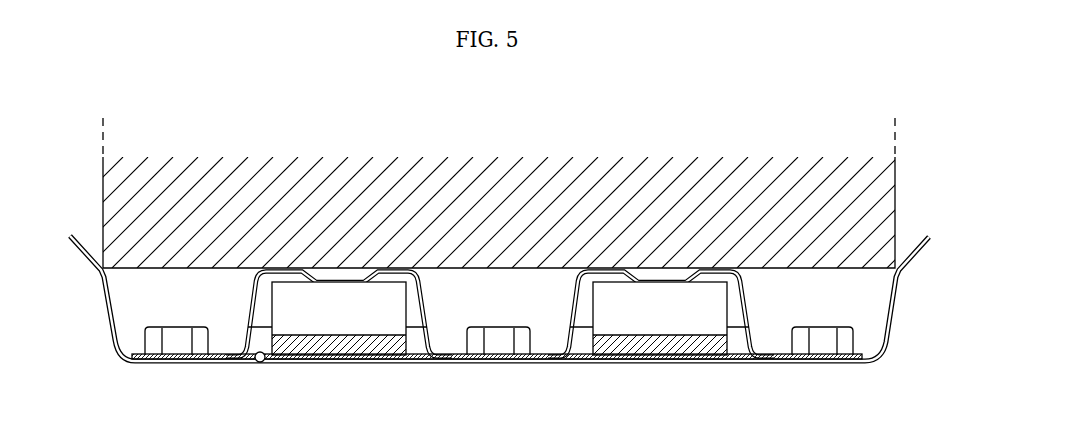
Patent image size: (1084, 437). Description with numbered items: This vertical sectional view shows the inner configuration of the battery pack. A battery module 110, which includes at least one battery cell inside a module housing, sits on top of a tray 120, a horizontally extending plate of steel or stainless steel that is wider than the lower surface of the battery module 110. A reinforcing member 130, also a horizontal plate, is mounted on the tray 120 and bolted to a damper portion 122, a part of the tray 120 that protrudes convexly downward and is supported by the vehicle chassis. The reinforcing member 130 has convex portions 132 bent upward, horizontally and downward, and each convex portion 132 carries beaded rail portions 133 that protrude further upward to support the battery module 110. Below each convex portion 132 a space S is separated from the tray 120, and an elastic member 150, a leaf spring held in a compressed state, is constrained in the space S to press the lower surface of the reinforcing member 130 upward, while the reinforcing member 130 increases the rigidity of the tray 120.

The battery module 110 is at (495, 182).
The tray 120 is at (143, 368).
The damper portion 122 is at (265, 363).
The reinforcing member 130 is at (243, 300).
The convex portion 132 is at (340, 280).
The rail portion 133 is at (278, 269).
The elastic member 150 is at (338, 358).
The space S is at (410, 345).